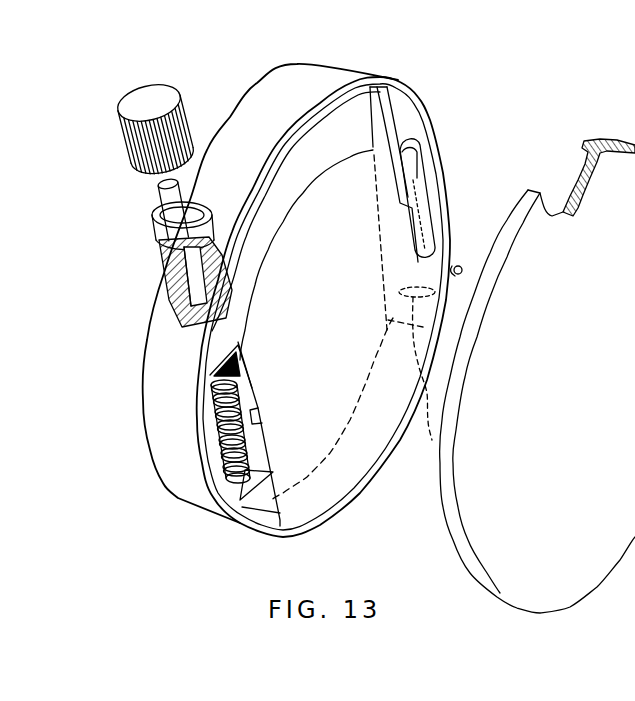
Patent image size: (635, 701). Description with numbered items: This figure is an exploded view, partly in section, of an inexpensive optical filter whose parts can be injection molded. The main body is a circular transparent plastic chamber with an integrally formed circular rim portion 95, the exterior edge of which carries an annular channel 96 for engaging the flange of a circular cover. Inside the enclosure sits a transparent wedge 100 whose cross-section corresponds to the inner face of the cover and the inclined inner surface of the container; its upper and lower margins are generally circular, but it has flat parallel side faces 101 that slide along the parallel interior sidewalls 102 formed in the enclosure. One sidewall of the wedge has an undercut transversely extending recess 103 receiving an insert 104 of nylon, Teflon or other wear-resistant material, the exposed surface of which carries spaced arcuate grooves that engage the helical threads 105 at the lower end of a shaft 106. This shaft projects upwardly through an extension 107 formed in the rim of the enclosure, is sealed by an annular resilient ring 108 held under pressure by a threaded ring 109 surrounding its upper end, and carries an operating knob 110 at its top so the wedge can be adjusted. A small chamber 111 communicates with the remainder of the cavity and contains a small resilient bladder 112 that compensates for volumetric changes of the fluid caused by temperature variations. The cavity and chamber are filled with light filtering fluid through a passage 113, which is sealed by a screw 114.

The circular rim portion 95 is at (303, 75).
The annular channel 96 is at (378, 84).
The transparent wedge 100 is at (340, 311).
The flat parallel side faces 101 is at (242, 388).
The parallel interior sidewalls 102 is at (377, 127).
The undercut transversely extending recess 103 is at (257, 437).
The insert 104 is at (258, 453).
The helical threads 105 is at (232, 375).
The shaft 106 is at (170, 297).
The extension 107 is at (192, 288).
The annular resilient ring 108 is at (160, 255).
The threaded ring 109 is at (155, 220).
The operating knob 110 is at (121, 133).
The small chamber 111 is at (427, 213).
The small resilient bladder 112 is at (413, 177).
The passage 113 is at (415, 367).
The screw 114 is at (462, 262).